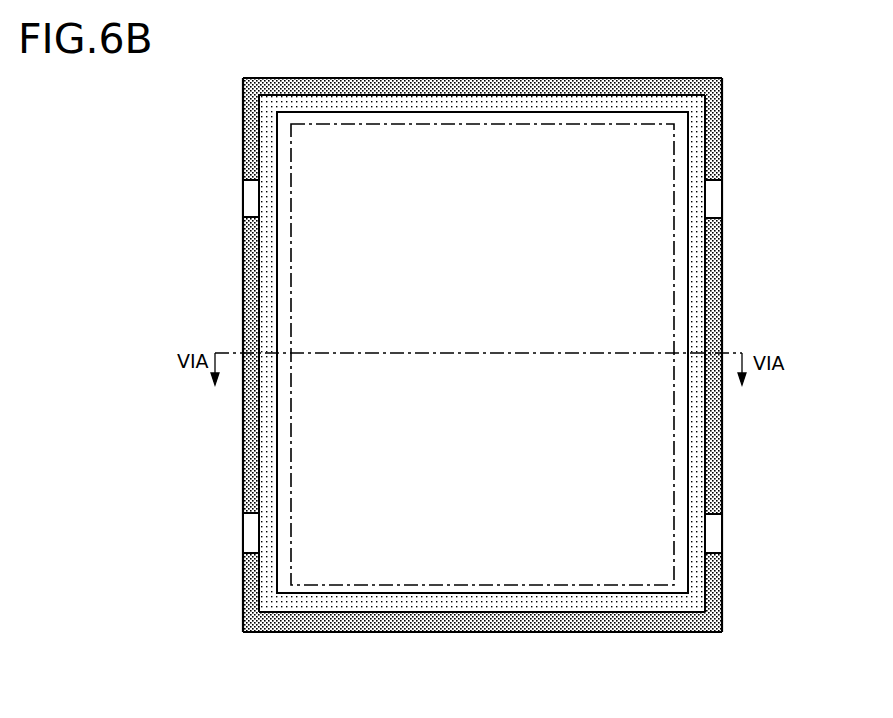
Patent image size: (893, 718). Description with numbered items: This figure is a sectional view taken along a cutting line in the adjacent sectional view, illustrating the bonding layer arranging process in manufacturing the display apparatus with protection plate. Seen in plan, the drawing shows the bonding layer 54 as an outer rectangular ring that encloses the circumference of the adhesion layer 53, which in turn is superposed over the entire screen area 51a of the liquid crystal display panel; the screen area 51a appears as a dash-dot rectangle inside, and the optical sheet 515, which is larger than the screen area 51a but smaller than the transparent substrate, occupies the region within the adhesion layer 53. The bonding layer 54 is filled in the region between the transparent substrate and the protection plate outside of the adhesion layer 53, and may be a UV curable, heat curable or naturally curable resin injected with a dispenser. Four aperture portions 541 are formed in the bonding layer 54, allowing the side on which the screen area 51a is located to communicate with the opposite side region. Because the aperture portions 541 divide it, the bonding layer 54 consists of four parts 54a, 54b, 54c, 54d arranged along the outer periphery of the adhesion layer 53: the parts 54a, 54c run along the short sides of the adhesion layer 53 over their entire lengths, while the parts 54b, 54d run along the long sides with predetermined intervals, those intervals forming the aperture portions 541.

The bonding layer 54 is at (481, 360).
The part of the bonding layer 54a is at (460, 84).
The part of the bonding layer 54b is at (252, 308).
The part of the bonding layer 54c is at (448, 623).
The part of the bonding layer 54d is at (715, 305).
The aperture portion 541 is at (477, 366).
The adhesion layer 53 is at (693, 468).
The optical sheet 515 is at (658, 170).
The screen area 51a is at (593, 124).